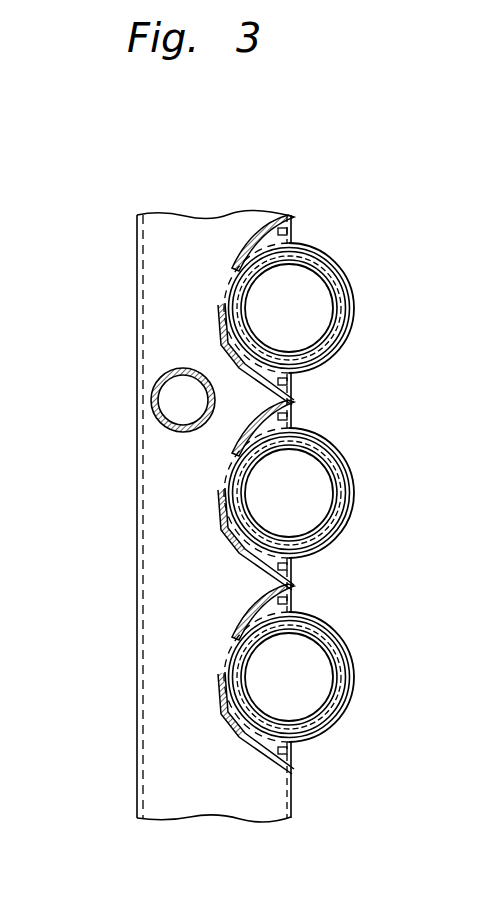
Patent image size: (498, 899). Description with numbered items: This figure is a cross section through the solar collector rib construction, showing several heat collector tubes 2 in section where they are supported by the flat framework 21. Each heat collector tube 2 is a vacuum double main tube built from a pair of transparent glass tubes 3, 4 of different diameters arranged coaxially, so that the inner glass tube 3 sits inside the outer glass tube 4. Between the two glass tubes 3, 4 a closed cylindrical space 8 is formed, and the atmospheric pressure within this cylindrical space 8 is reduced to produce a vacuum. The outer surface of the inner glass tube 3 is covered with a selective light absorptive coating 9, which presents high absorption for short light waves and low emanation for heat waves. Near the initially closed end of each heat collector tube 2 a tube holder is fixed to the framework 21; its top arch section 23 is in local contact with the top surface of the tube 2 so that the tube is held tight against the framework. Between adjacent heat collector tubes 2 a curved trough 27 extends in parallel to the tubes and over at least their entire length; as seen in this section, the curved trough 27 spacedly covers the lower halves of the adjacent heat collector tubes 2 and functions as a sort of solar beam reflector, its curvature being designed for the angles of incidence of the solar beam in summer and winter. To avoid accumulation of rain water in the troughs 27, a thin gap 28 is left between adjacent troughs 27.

The heat collector tube 2 is at (325, 494).
The inner glass tube 3 is at (346, 336).
The outer glass tube 4 is at (326, 358).
The cylindrical space 8 is at (341, 310).
The selective light absorptive coating 9 is at (337, 284).
The framework 21 is at (158, 376).
The top arch section 23 is at (333, 252).
The curved trough 27 is at (308, 384).
The thin gap 28 is at (227, 462).